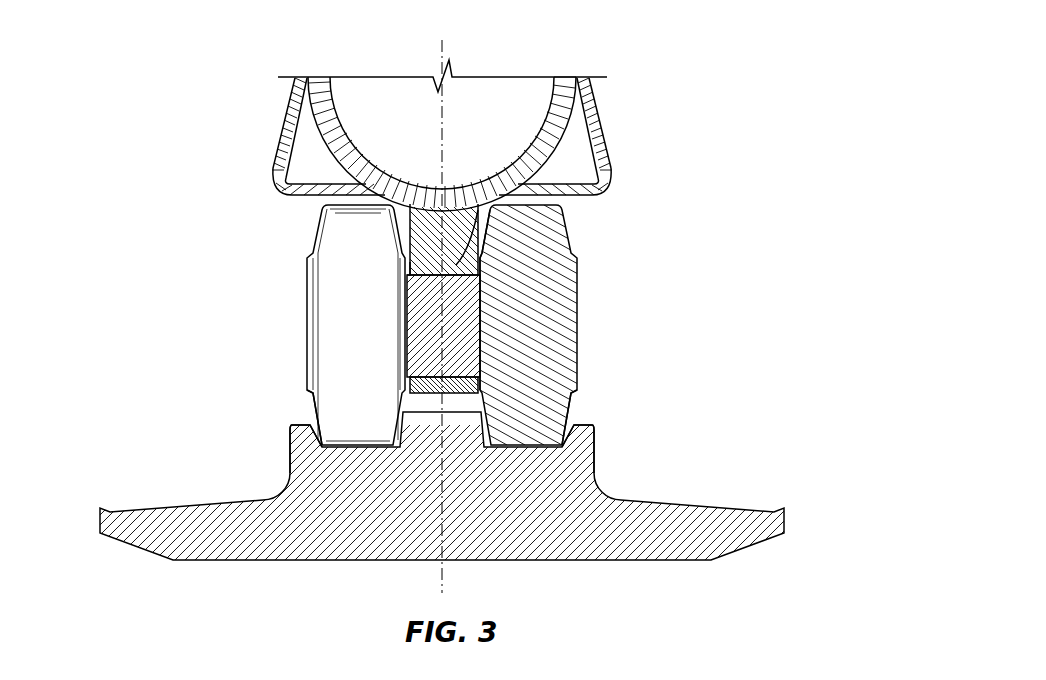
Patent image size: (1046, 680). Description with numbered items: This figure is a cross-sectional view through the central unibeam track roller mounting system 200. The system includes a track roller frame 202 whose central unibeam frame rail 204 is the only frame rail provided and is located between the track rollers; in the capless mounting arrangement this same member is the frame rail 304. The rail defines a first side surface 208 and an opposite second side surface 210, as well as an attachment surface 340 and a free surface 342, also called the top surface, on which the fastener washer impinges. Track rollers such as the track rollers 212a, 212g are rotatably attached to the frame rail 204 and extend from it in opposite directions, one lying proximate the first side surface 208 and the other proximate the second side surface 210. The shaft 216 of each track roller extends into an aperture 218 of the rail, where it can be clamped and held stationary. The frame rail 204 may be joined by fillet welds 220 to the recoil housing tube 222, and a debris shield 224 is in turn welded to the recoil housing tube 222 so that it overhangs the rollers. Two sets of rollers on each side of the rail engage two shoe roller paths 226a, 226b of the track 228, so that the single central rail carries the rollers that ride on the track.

The central unibeam track roller mounting system 200 is at (700, 50).
The track roller frame 202 is at (622, 146).
The central unibeam frame rail 204 is at (480, 217).
The frame rail 304 is at (529, 325).
The first side surface 208 is at (482, 250).
The second side surface 210 is at (410, 233).
The track roller 212a is at (573, 413).
The track roller 212g is at (313, 413).
The shaft 216 is at (465, 313).
The aperture 218 is at (423, 268).
The fillet weld 220 is at (411, 192).
The recoil housing tube 222 is at (530, 165).
The debris shield 224 is at (614, 170).
The shoe roller path 226a is at (318, 433).
The shoe roller path 226b is at (566, 433).
The track 228 is at (178, 525).
The attachment surface 340 is at (480, 266).
The free surface 342 is at (430, 395).